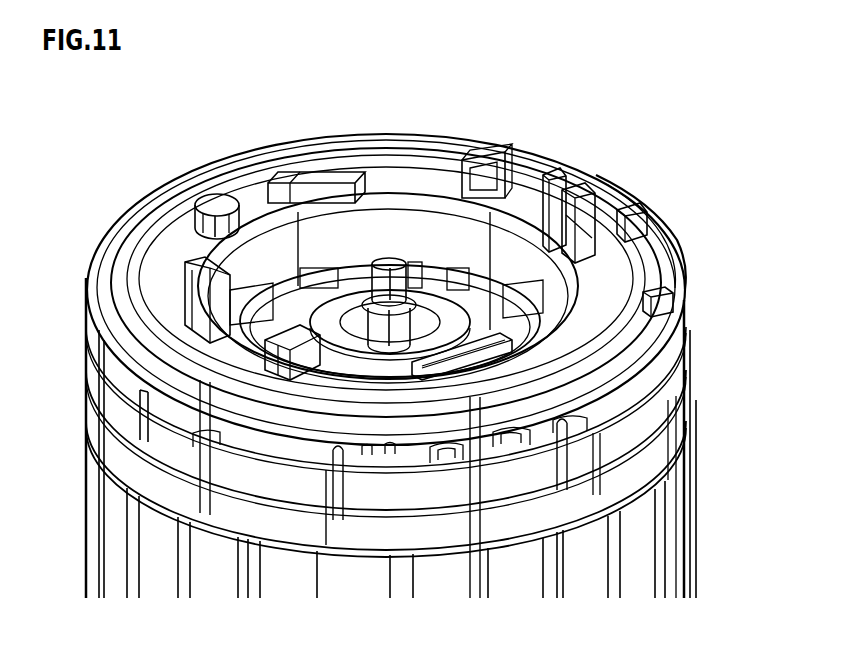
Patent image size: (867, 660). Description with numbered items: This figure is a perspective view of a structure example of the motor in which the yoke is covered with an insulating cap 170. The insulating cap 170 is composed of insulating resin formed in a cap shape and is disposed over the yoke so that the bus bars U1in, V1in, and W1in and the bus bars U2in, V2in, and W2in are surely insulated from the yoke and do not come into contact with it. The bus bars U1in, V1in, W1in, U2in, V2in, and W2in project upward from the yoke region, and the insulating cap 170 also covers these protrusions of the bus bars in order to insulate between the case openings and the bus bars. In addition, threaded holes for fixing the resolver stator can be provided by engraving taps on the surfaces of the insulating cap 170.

The bus bar U1in is at (195, 285).
The bus bar V1in is at (283, 330).
The bus bar W1in is at (290, 176).
The bus bar U2in is at (600, 204).
The bus bar V2in is at (557, 182).
The bus bar W2in is at (486, 158).
The insulating cap 170 is at (651, 248).